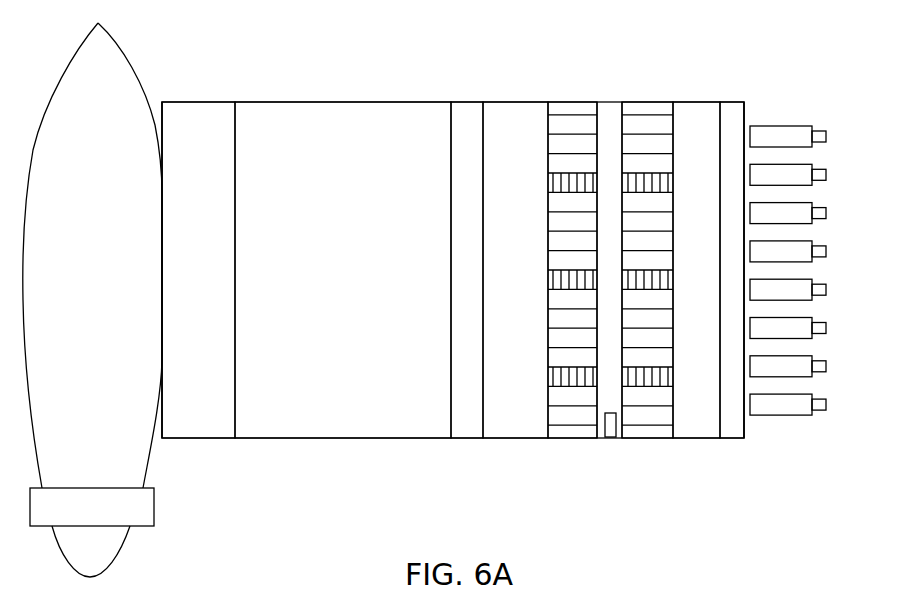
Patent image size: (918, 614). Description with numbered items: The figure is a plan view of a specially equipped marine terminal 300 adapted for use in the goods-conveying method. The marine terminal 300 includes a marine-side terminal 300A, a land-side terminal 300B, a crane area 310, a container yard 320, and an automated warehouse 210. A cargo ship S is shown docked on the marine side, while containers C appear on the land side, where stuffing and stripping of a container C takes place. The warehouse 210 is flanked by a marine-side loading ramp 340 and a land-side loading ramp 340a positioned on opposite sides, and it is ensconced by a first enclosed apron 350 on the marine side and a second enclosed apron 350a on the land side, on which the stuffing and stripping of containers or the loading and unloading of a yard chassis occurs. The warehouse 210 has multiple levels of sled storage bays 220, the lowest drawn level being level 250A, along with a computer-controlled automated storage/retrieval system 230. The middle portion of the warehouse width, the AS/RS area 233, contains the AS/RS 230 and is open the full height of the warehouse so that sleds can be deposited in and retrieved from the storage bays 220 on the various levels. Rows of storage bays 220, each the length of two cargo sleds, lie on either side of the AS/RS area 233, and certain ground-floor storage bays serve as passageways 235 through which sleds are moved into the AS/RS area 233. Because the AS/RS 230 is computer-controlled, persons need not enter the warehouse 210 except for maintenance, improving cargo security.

The cargo ship S is at (82, 296).
The marine terminal 300 is at (315, 83).
The marine-side terminal 300A is at (163, 103).
The land-side terminal 300B is at (745, 110).
The crane area 310 is at (198, 270).
The container yard 320 is at (343, 270).
The marine-side loading ramp 340 is at (472, 428).
The first enclosed apron 350 is at (530, 413).
The second enclosed apron 350a is at (692, 423).
The land-side loading ramp 340a is at (735, 432).
The level 250A is at (548, 438).
The automated warehouse 210 is at (577, 133).
The passageways 235 is at (548, 377).
The AS/RS area 233 is at (607, 183).
The sled storage bays 220 is at (596, 128).
The automated storage/retrieval system (AS/RS) 230 is at (613, 439).
The container C is at (806, 171).